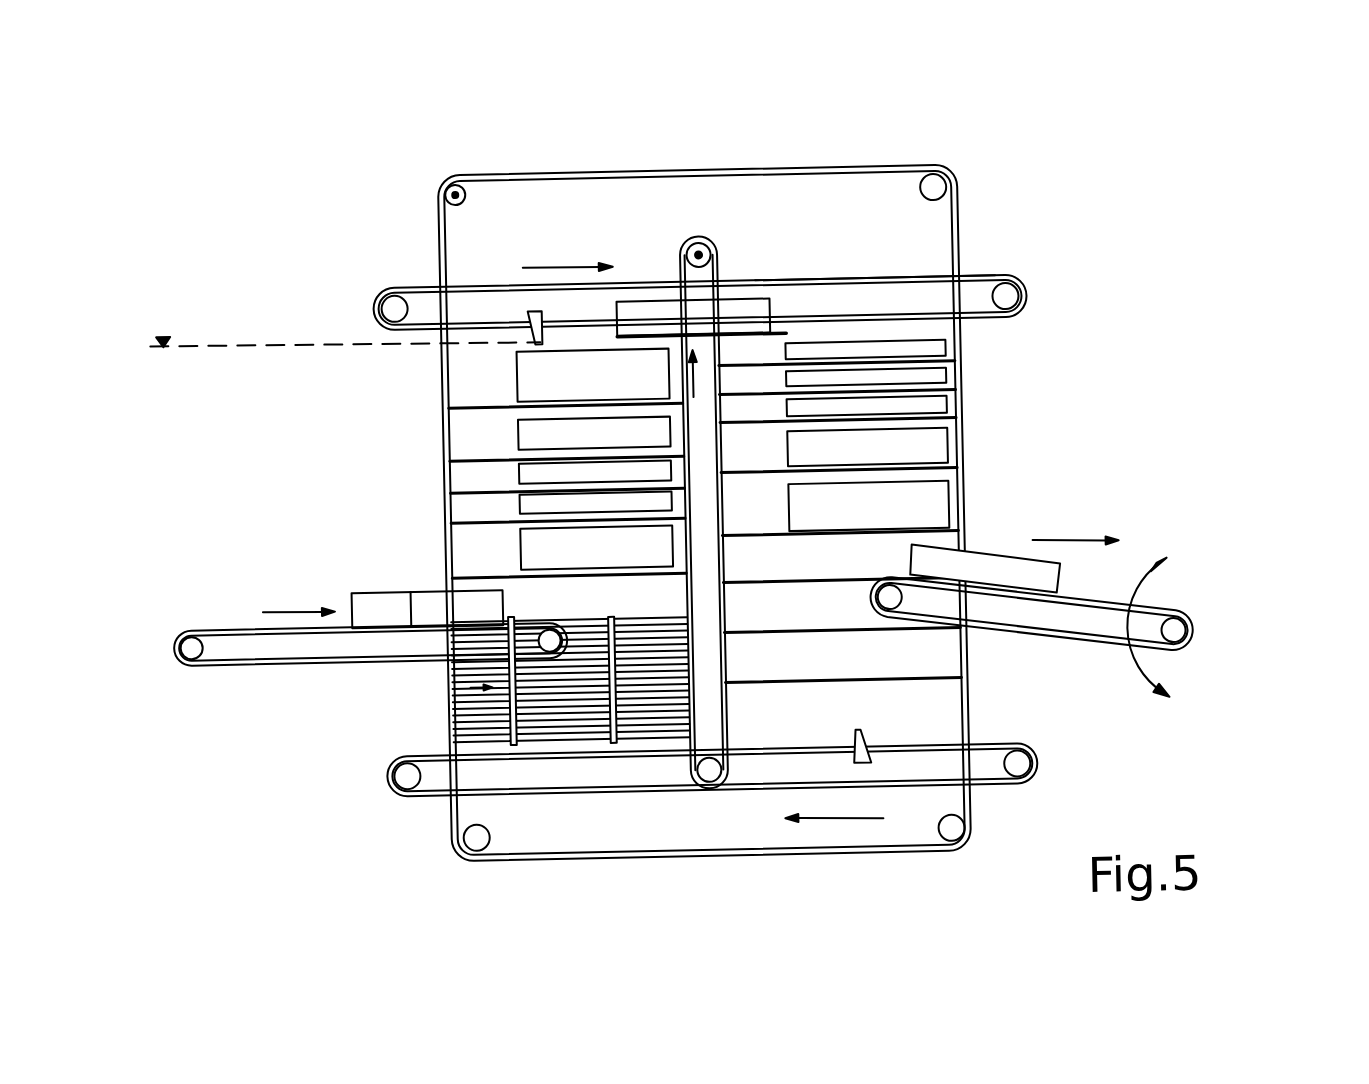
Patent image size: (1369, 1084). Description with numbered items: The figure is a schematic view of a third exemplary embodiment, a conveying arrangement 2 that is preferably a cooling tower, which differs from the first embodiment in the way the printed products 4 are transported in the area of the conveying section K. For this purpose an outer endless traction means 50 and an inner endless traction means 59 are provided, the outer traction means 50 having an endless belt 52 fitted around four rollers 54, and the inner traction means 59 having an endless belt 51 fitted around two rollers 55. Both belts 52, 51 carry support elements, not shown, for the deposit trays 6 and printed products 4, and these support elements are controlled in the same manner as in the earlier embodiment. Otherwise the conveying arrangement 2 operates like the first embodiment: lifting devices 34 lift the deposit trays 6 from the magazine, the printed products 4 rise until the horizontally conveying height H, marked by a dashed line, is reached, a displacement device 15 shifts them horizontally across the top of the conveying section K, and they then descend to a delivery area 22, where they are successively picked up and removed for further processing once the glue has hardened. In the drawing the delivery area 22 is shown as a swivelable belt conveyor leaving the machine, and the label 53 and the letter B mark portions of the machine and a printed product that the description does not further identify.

The conveying arrangement 2 is at (712, 450).
The printed products 4 is at (369, 581).
The deposit trays 6 is at (507, 681).
The displacement device 15 is at (629, 256).
The delivery area 22 is at (1102, 615).
The lifting devices 34 is at (556, 591).
The outer endless traction means 50 is at (596, 484).
The endless belt 51 is at (750, 487).
The endless belt 52 is at (703, 477).
The belt run 53 is at (874, 254).
The rollers 54 is at (346, 130).
The rollers 55 is at (702, 255).
The inner endless traction means 59 is at (662, 262).
The flat item B is at (427, 610).
The horizontally conveying height H is at (344, 323).
The conveying section K is at (965, 428).